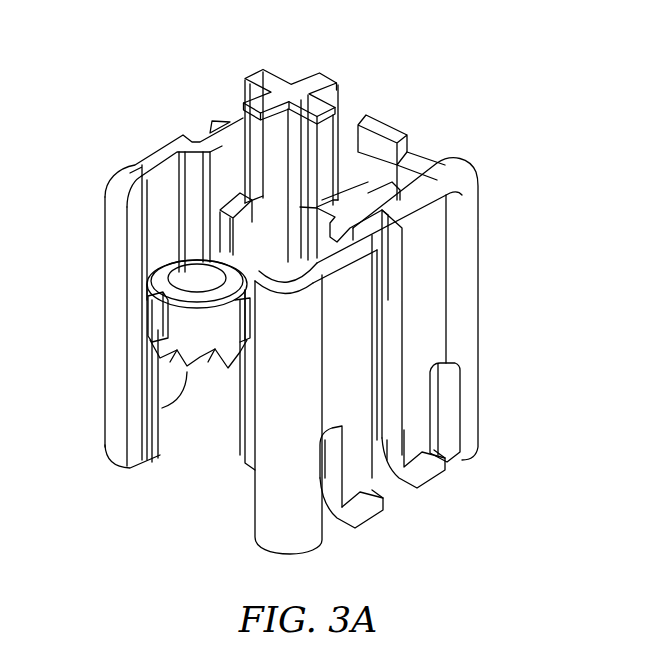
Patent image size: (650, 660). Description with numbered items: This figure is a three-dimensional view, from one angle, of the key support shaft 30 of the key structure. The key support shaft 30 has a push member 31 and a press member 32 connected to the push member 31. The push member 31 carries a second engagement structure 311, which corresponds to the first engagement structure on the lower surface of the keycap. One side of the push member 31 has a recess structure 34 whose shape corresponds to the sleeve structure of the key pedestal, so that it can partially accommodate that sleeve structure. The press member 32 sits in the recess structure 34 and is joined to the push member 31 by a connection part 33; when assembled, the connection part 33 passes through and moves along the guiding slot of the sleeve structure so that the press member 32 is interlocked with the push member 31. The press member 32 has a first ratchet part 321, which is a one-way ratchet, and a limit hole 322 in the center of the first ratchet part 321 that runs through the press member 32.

The key support shaft 30 is at (74, 58).
The push member 31 is at (432, 295).
The second engagement structure 311 is at (324, 78).
The press member 32 is at (160, 278).
The first ratchet part 321 is at (191, 378).
The limit hole 322 is at (183, 272).
The connection part 33 is at (236, 205).
The recess structure 34 is at (250, 325).